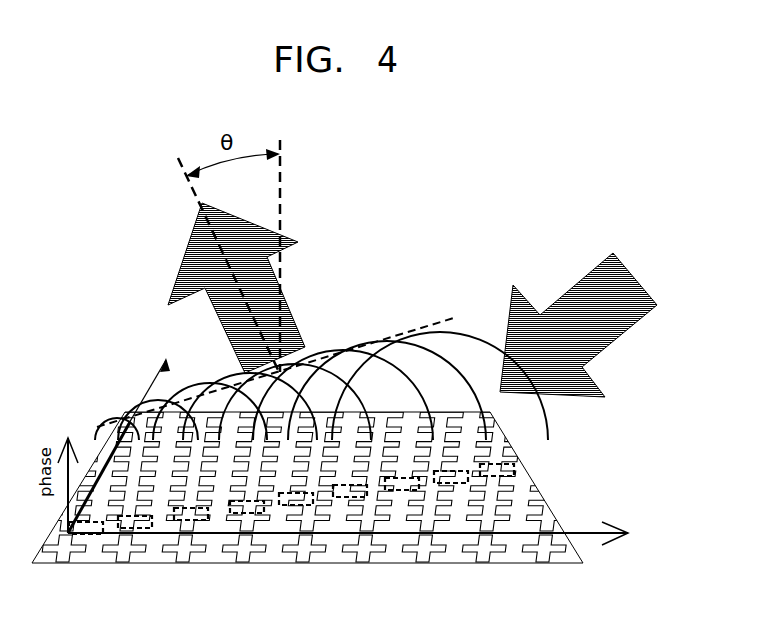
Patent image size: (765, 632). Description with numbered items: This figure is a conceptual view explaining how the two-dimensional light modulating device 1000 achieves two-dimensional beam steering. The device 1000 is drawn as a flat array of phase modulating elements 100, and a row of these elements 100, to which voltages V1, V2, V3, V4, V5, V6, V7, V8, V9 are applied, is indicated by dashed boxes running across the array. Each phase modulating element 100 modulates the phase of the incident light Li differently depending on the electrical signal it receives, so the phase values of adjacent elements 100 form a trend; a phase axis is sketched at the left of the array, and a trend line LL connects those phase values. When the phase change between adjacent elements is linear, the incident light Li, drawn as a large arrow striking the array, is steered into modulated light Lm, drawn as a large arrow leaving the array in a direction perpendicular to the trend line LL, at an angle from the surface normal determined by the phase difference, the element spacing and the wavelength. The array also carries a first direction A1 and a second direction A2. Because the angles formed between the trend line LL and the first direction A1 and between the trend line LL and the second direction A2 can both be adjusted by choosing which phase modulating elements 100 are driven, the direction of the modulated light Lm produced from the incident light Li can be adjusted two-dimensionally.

The phase modulating element 100 is at (525, 525).
The 2D light modulating device 1000 is at (359, 505).
The first direction A1 is at (365, 533).
The second direction A2 is at (154, 382).
The voltage V1 is at (72, 505).
The voltage V2 is at (132, 505).
The voltage V3 is at (192, 505).
The voltage V4 is at (252, 505).
The voltage V5 is at (312, 505).
The voltage V6 is at (372, 505).
The voltage V7 is at (432, 505).
The voltage V8 is at (492, 505).
The voltage V9 is at (552, 505).
The trend line LL is at (441, 314).
The modulated light Lm is at (230, 288).
The incident light Li is at (584, 323).